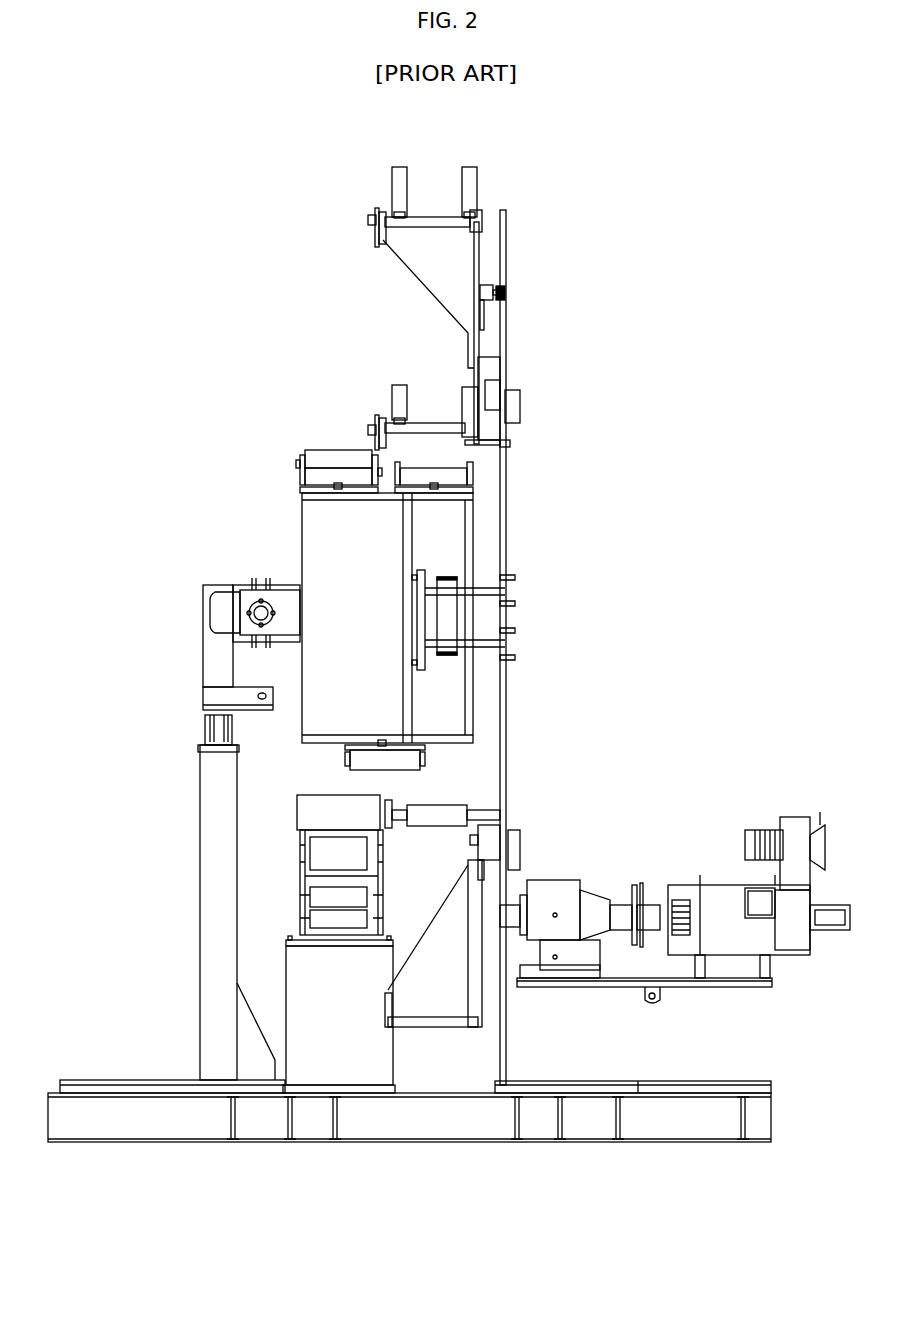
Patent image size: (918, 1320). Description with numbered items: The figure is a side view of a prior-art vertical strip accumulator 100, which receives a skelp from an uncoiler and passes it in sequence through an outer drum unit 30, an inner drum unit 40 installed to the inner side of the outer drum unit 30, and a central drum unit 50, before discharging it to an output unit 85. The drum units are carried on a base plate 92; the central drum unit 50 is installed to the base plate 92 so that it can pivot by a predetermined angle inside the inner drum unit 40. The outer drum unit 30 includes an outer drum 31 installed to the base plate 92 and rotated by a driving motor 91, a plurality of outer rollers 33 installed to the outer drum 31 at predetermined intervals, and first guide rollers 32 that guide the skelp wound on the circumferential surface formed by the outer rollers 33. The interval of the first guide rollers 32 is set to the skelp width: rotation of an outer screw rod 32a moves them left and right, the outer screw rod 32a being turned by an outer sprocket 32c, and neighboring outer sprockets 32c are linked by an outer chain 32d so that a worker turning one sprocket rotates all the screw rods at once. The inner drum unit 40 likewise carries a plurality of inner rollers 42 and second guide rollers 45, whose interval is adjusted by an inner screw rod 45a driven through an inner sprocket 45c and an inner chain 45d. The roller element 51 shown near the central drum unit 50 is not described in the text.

The vertical strip accumulator 100 is at (350, 1161).
The base plate 92 is at (507, 488).
The outer drum 31 is at (465, 257).
The outer drum unit 30 is at (411, 280).
The first guide rollers 32 is at (483, 166).
The outer screw rod 32a is at (430, 217).
The outer sprocket 32c is at (381, 214).
The outer chain 32d is at (375, 239).
The inner drum unit 40 is at (386, 374).
The second guide rollers 45 is at (414, 384).
The inner screw rod 45a is at (437, 428).
The inner sprocket 45c is at (381, 419).
The inner chain 45d is at (375, 437).
The central drum unit 50 is at (289, 532).
The feed roller 51 is at (305, 453).
The output unit 85 is at (291, 826).
The inner rollers 42 is at (452, 805).
The outer rollers 33 is at (442, 1027).
The driving motor 91 is at (670, 864).